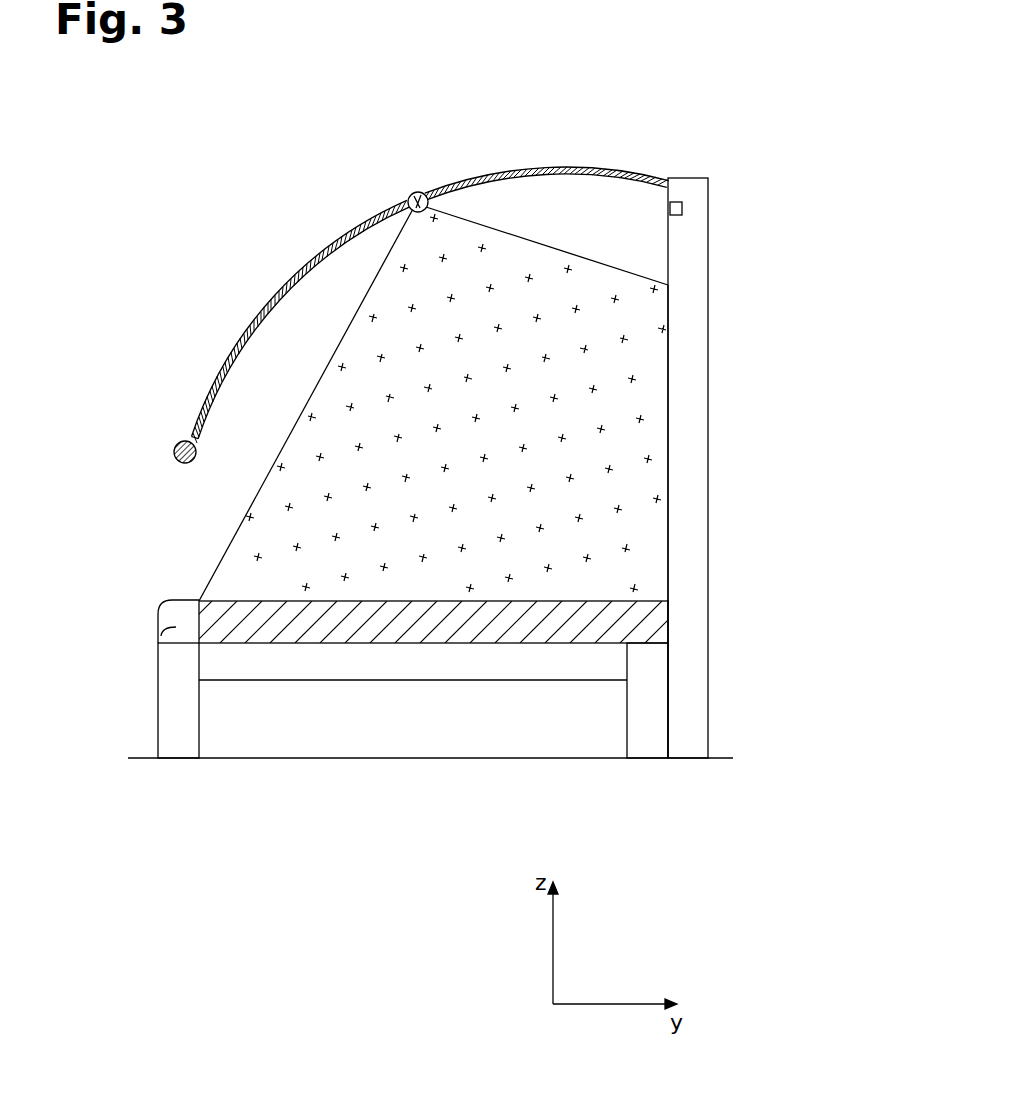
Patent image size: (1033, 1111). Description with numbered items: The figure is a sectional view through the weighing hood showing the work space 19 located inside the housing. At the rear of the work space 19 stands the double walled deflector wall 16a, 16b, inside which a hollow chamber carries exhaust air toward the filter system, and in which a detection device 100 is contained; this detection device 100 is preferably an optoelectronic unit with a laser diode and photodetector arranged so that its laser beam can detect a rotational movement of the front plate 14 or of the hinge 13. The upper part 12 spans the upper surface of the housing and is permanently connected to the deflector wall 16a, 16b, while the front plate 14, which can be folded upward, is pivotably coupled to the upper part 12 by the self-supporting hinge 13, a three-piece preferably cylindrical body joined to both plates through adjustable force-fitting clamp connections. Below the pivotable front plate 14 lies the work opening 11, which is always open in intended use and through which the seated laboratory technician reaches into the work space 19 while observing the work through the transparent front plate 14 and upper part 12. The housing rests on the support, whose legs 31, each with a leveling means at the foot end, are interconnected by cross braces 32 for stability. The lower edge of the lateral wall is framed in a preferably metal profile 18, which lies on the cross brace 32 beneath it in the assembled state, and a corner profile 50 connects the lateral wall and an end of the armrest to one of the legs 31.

The detection device 100 is at (679, 202).
The work opening 11 is at (188, 535).
The upper part 12 is at (553, 168).
The hinge 13 is at (414, 192).
The front plate 14 is at (272, 295).
The deflector wall (first wall of double walled deflector wall) 16a is at (710, 402).
The deflector wall (second wall of double walled deflector wall) 16b is at (670, 558).
The profile 18 is at (600, 625).
The work space 19 is at (280, 403).
The legs 31 is at (182, 723).
The cross braces 32 is at (355, 665).
The corner profile 50 is at (183, 627).